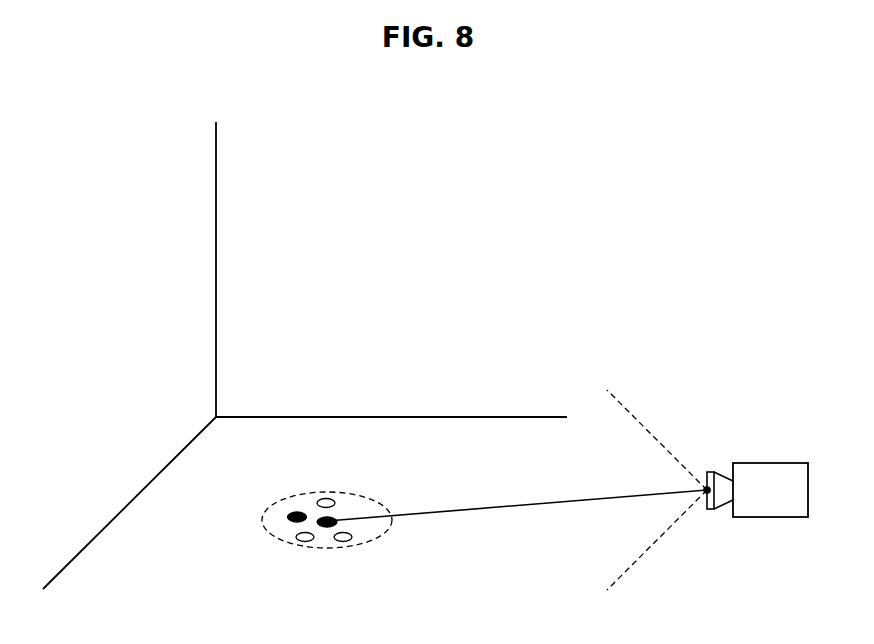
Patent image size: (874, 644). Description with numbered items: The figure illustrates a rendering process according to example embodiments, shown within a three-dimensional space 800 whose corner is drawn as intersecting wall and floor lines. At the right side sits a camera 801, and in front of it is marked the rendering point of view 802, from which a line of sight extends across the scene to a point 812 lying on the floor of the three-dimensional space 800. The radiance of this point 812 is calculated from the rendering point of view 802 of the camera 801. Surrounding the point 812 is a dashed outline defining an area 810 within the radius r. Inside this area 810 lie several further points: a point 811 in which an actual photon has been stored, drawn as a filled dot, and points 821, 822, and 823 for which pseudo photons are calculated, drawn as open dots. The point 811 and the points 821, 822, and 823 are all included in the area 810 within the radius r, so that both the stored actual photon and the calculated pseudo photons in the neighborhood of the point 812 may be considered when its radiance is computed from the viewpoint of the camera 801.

The 3D space 800 is at (438, 104).
The camera 801 is at (771, 463).
The rendering point of view 802 is at (705, 489).
The area 810 is at (375, 495).
The point 811 is at (288, 514).
The point 812 is at (317, 522).
The point 821 is at (323, 499).
The point 822 is at (306, 542).
The point 823 is at (346, 542).